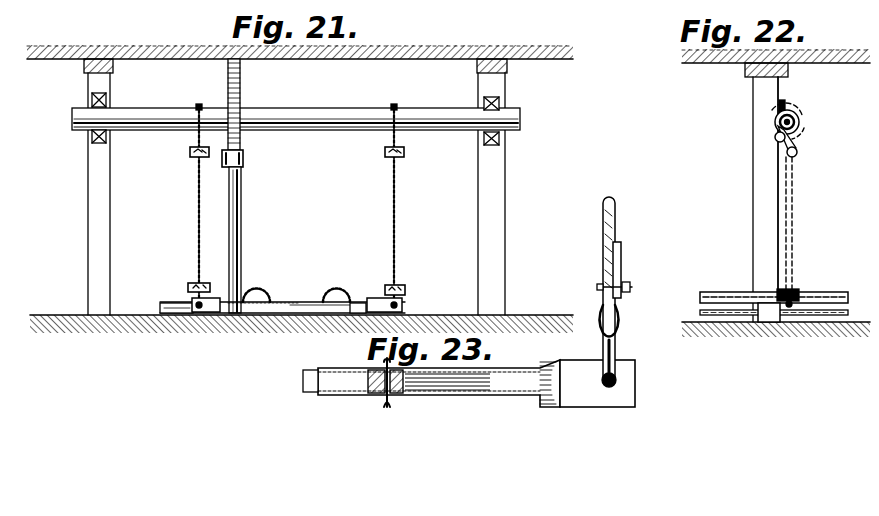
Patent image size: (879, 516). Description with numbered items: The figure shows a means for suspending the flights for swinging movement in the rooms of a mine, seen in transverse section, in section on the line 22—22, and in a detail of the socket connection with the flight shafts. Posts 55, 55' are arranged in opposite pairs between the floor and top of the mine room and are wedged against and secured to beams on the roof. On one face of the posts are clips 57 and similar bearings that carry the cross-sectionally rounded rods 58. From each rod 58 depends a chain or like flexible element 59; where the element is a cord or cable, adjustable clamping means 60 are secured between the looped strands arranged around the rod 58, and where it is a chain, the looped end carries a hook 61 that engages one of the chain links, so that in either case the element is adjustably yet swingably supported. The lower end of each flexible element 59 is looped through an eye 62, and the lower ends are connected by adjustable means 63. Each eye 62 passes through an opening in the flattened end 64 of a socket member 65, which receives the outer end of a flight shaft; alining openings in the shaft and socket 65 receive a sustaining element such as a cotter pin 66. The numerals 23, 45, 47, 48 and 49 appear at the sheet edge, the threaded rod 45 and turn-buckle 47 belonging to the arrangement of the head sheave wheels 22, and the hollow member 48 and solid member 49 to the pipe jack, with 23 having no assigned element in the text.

In FIG. 21, the head sheave wheel 22 is at (419, 196).
In FIG. 21, the reference from adjacent figure 23 is at (215, 2).
In FIG. 21, the threaded rod 45 is at (96, 10).
In FIG. 21, the turn-buckle 47 is at (33, 12).
In FIG. 21, the hollow member 48 is at (242, 206).
In FIG. 21, the solid member 49 is at (240, 99).
In FIG. 21, the post 55 is at (80, 187).
In FIG. 21, the post 55' is at (518, 187).
In FIG. 22, the post 55' is at (750, 192).
In FIG. 21, the clip 57 is at (90, 128).
In FIG. 21, the rod 58 is at (340, 130).
In FIG. 22, the rod 58 is at (800, 125).
In FIG. 21, the flexible element 59 is at (197, 197).
In FIG. 22, the flexible element 59 is at (794, 201).
In FIG. 21, the adjustable clamping means 60 is at (190, 152).
In FIG. 22, the hook 61 is at (797, 157).
In FIG. 23, the eye 62 is at (616, 345).
In FIG. 21, the adjustable means 63 is at (420, 265).
In FIG. 22, the adjustable means 63 is at (788, 298).
In FIG. 23, the adjustable means 63 is at (632, 289).
In FIG. 21, the flattened end 64 is at (406, 300).
In FIG. 22, the flattened end 64 is at (788, 325).
In FIG. 23, the flattened end 64 is at (625, 389).
In FIG. 21, the socket member 65 is at (368, 297).
In FIG. 22, the socket member 65 is at (774, 303).
In FIG. 23, the socket member 65 is at (431, 383).
In FIG. 21, the cotter pin 66 is at (245, 292).
In FIG. 23, the cotter pin 66 is at (362, 370).